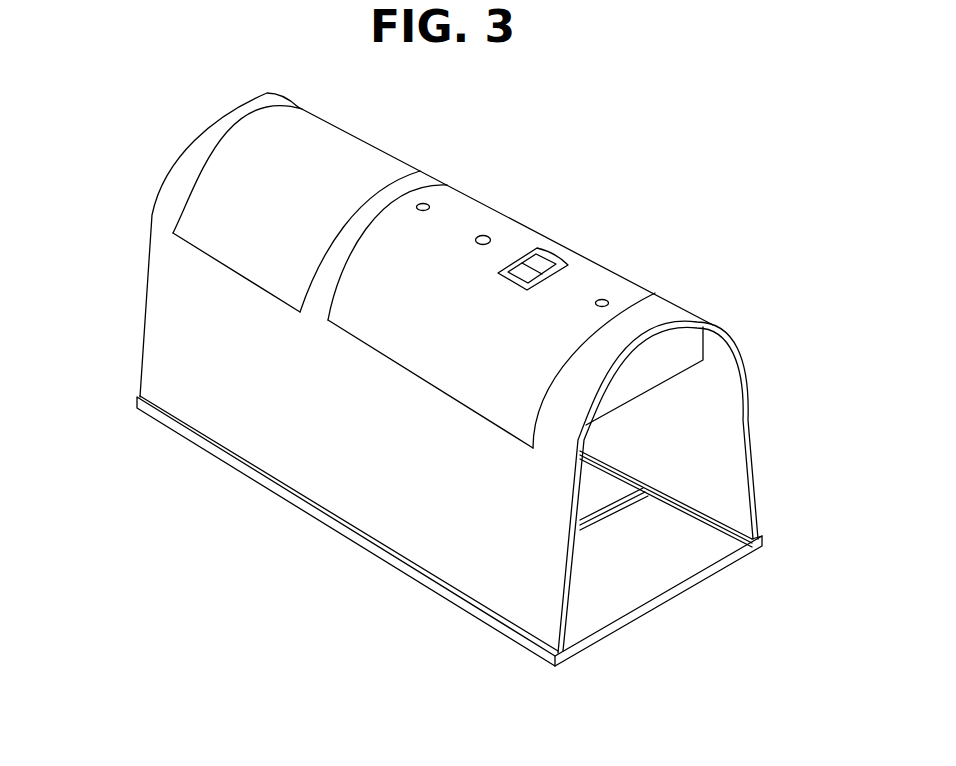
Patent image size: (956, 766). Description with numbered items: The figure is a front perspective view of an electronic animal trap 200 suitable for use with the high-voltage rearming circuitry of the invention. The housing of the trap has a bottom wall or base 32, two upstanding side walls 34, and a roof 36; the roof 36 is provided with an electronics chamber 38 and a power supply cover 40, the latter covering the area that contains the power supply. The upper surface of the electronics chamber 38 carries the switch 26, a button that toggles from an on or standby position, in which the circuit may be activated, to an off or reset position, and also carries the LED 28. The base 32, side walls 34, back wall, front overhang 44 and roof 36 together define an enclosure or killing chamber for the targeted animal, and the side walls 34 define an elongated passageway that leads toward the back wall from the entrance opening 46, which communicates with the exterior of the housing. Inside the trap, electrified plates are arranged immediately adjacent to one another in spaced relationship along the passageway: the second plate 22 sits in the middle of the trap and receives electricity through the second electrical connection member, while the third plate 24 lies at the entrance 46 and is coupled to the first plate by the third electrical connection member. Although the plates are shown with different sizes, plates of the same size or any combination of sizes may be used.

The electronic animal trap 200 is at (188, 110).
The power supply cover 40 is at (337, 117).
The side walls 34 is at (167, 334).
The roof 36 is at (418, 183).
The electronics chamber 38 is at (612, 285).
The LED 28 is at (487, 235).
The switch 26 is at (546, 252).
The front overhang 44 is at (687, 346).
The second plate 22 is at (600, 487).
The bottom wall 32 is at (443, 588).
The third plate 24 is at (655, 561).
The entrance opening 46 is at (702, 545).